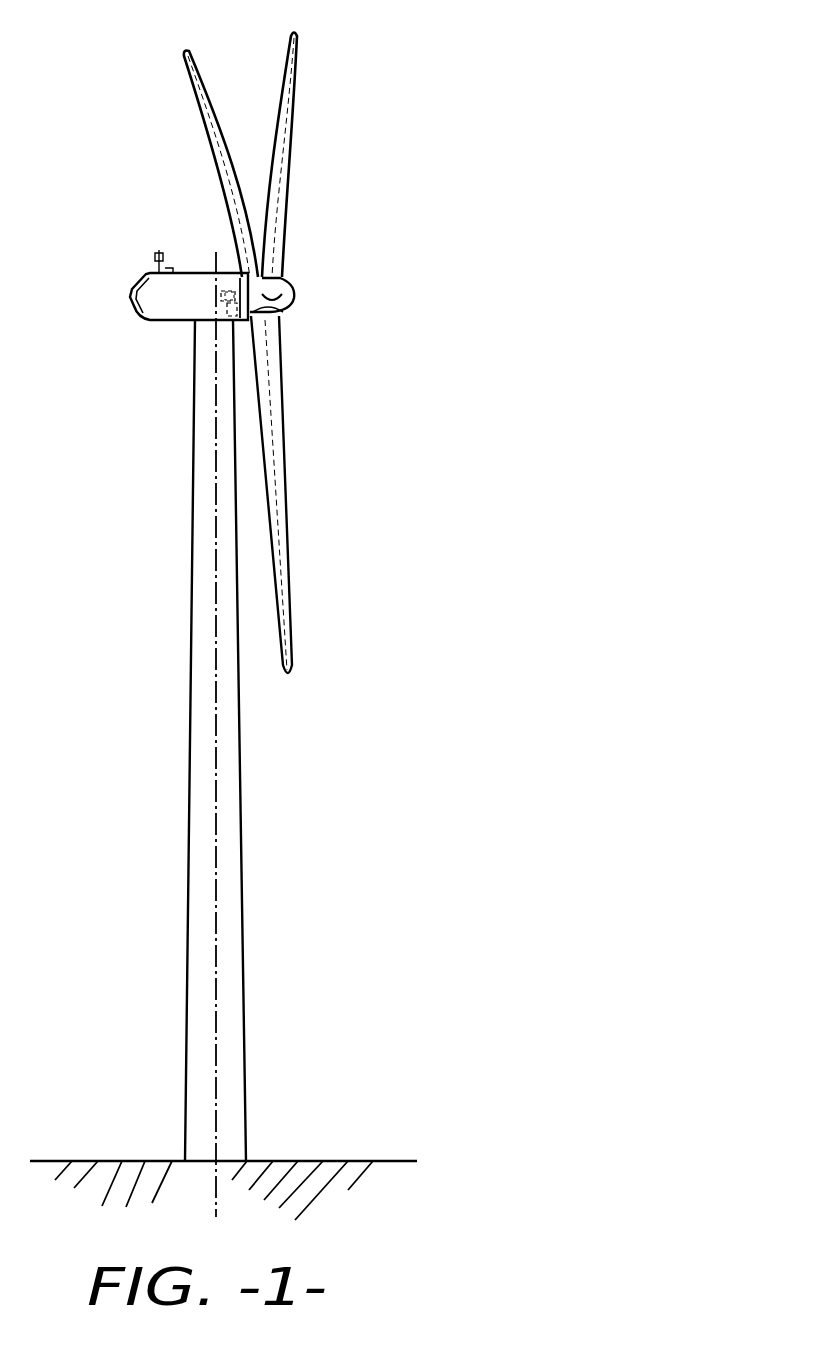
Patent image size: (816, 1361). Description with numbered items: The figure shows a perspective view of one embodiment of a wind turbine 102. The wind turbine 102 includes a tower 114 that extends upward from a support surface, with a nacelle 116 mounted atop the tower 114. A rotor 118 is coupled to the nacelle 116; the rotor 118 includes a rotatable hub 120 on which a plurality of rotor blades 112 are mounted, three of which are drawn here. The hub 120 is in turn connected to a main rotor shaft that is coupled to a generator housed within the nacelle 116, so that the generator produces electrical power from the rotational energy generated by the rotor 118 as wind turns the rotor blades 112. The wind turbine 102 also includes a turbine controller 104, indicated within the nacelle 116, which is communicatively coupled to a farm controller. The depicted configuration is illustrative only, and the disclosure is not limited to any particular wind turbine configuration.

The wind turbine 102 is at (414, 113).
The turbine controller 104 is at (240, 277).
The rotor blades 112 is at (288, 75).
The tower 114 is at (190, 857).
The nacelle 116 is at (174, 322).
The rotor 118 is at (309, 277).
The rotatable hub 120 is at (297, 301).